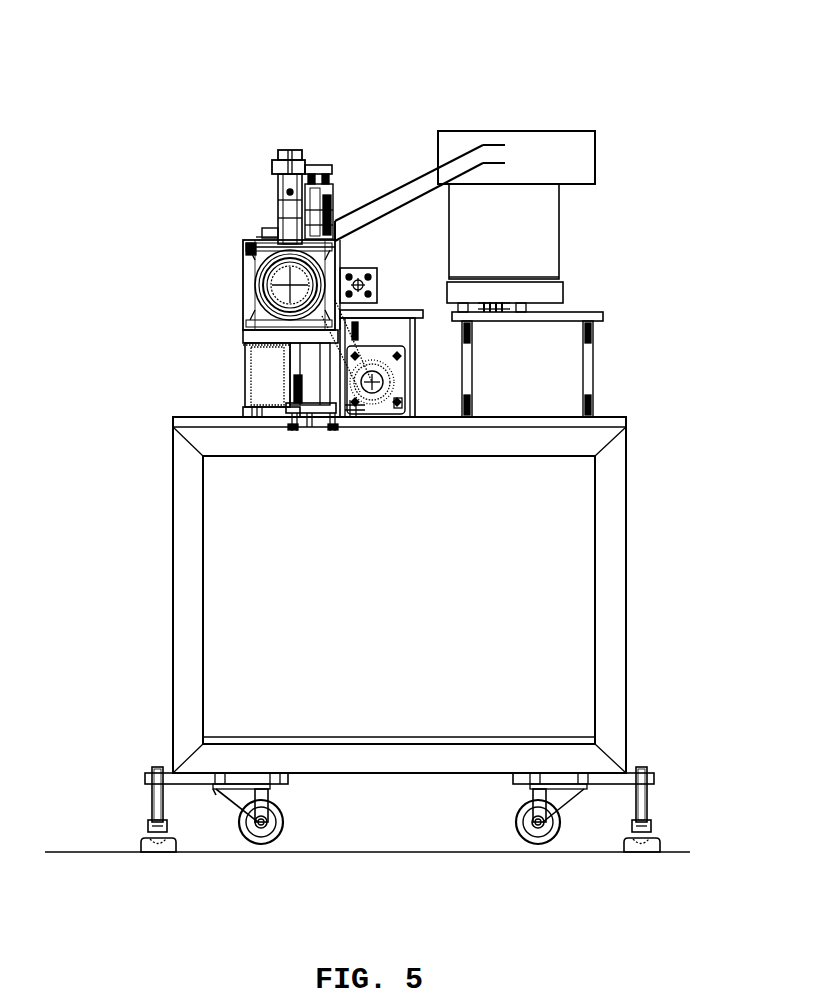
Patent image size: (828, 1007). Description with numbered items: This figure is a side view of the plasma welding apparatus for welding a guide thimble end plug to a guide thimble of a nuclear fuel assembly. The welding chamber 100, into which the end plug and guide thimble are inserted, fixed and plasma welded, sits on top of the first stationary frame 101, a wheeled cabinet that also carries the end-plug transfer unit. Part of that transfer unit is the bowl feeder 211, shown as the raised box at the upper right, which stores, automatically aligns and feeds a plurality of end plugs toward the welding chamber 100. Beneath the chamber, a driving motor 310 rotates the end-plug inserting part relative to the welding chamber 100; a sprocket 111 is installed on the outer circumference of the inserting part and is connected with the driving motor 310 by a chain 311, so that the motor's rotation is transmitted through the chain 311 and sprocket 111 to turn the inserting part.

The welding chamber 100 is at (224, 197).
The first stationary frame 101 is at (183, 618).
The sprocket 111 is at (420, 348).
The bowl feeder 211 is at (525, 137).
The driving motor 310 is at (402, 380).
The chain 311 is at (290, 345).